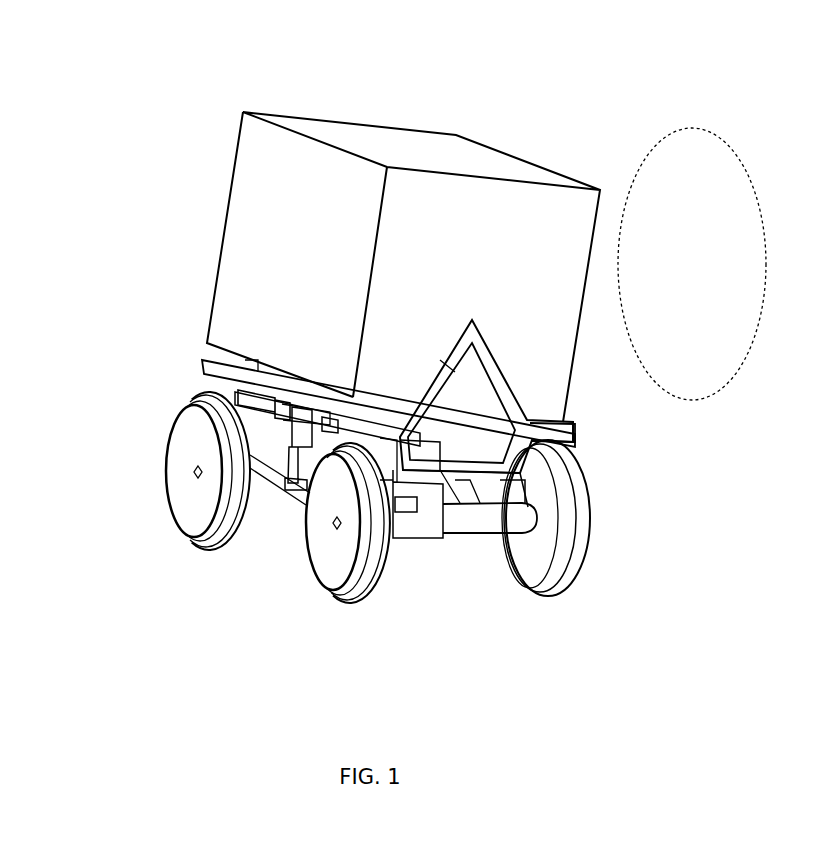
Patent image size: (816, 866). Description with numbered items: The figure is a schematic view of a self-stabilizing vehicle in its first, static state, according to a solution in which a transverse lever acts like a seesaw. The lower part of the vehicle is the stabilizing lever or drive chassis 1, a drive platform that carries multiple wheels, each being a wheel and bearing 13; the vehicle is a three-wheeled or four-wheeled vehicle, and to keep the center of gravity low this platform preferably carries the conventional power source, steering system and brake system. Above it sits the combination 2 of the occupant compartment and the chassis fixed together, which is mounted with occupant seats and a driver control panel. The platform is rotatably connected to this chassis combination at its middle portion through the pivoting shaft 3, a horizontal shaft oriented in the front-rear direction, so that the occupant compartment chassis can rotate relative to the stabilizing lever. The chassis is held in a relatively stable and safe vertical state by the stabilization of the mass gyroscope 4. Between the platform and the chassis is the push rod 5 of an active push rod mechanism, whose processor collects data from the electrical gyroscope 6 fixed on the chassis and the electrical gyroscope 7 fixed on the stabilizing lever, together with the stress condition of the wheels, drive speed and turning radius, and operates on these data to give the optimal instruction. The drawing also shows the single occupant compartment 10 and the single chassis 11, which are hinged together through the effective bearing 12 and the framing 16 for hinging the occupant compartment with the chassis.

The stabilizing lever/drive chassis 1 is at (518, 533).
The occupant compartment and chassis combination 2 is at (700, 119).
The pivoting shaft 3 is at (467, 530).
The mass gyroscope 4 is at (247, 390).
The push rod 5 is at (268, 416).
The electrical gyroscope fixed on the chassis 6 is at (316, 399).
The electrical gyroscope fixed on the stabilizing lever 7 is at (423, 529).
The single occupant compartment 10 is at (580, 287).
The single chassis 11 is at (586, 427).
The effective bearing 12 is at (475, 308).
The wheel and bearing 13 is at (319, 551).
The framing 16 is at (425, 356).